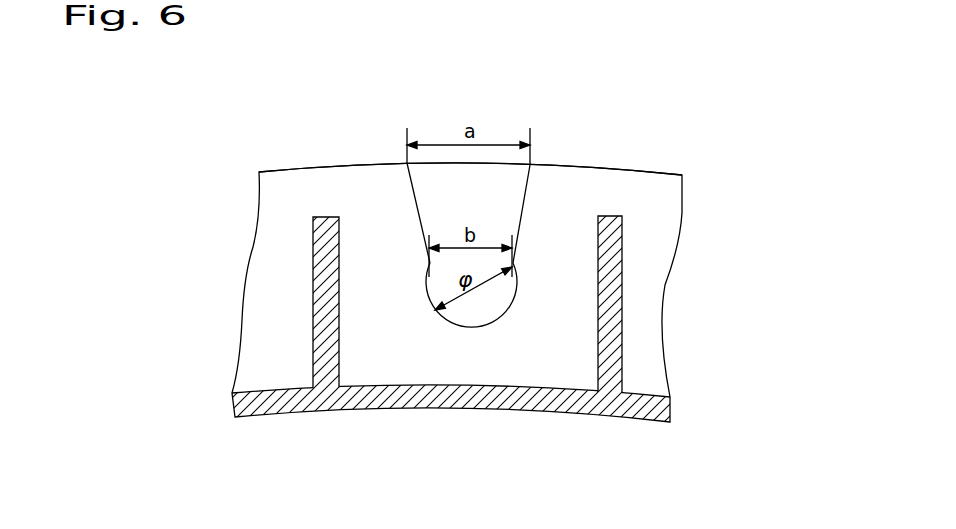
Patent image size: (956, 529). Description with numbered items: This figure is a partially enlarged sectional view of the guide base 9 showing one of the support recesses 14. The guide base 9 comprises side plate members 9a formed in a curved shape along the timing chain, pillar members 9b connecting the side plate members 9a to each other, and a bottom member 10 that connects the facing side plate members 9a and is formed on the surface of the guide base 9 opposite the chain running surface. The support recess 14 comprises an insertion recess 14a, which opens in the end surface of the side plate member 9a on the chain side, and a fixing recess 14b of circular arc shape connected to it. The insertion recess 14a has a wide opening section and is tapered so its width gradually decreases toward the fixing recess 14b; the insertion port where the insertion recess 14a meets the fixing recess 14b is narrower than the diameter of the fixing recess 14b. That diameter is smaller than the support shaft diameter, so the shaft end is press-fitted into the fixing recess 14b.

The guide base 9 is at (613, 163).
The side plate member 9a is at (281, 187).
The pillar member 9b is at (313, 293).
The bottom member 10 is at (480, 398).
The support recess 14 is at (461, 227).
The insertion recess 14a is at (415, 185).
The fixing recess 14b is at (500, 302).